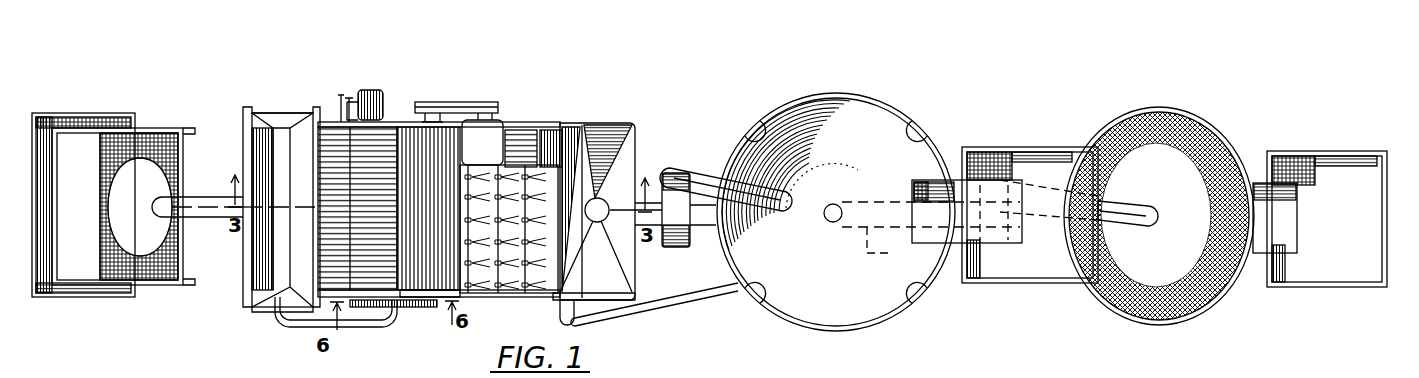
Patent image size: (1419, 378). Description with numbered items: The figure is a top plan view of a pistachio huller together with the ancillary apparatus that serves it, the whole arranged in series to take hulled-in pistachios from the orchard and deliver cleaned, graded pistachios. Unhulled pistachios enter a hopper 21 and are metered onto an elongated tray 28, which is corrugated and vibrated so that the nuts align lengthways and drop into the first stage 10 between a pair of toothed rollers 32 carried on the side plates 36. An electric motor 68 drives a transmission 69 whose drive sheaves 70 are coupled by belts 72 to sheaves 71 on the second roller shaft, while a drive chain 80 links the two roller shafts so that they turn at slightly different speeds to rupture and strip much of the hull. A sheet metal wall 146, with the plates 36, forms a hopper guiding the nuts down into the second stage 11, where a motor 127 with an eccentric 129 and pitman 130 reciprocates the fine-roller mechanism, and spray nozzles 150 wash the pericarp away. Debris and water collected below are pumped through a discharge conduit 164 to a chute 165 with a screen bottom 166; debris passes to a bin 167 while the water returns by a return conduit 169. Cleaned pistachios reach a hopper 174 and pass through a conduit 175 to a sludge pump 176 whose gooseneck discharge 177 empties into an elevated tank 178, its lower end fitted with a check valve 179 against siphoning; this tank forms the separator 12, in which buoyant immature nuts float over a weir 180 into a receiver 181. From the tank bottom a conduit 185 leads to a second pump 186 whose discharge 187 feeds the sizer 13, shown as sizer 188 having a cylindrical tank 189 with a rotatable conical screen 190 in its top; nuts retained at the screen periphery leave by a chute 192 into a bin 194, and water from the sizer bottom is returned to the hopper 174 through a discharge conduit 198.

The first stage 10 is at (417, 310).
The second stage 11 is at (604, 123).
The separator 12 is at (884, 92).
The sizer 13 is at (1218, 120).
The hopper 21 is at (278, 113).
The elongated tray 28 is at (322, 250).
The rollers 32 is at (430, 140).
The rectangular plates 36 is at (403, 122).
The electric motor 68 is at (535, 130).
The transmission 69 is at (495, 154).
The drive sheaves 70 is at (492, 102).
The sheaves 71 is at (433, 113).
The belts 72 is at (458, 102).
The drive chain 80 is at (370, 307).
The motor 127 is at (372, 90).
The eccentric 129 is at (349, 98).
The pitman 130 is at (341, 95).
The sheet metal wall 146 is at (470, 252).
The spray nozzles 150 is at (535, 240).
The discharge conduit 164 is at (207, 196).
The chute 165 is at (150, 128).
The screen bottom 166 is at (157, 185).
The bin 167 is at (65, 113).
The return conduit 169 is at (292, 325).
The hopper 174 is at (642, 160).
The conduit 175 is at (652, 175).
The fruit or sludge pump 176 is at (672, 250).
The gooseneck discharge 177 is at (742, 225).
The elevated tank 178 is at (824, 98).
The check valve 179 is at (790, 210).
The weir 180 is at (914, 180).
The receiver 181 is at (1028, 150).
The conduit 185 is at (868, 250).
The fruit or sludge pump 186 is at (1022, 225).
The discharge 187 is at (1118, 205).
The sizer 188 is at (1213, 300).
The cylindrical tank 189 is at (1210, 325).
The conical screen 190 is at (1205, 227).
The chute 192 is at (1290, 222).
The bin 194 is at (1317, 155).
The discharge conduit 198 is at (666, 300).